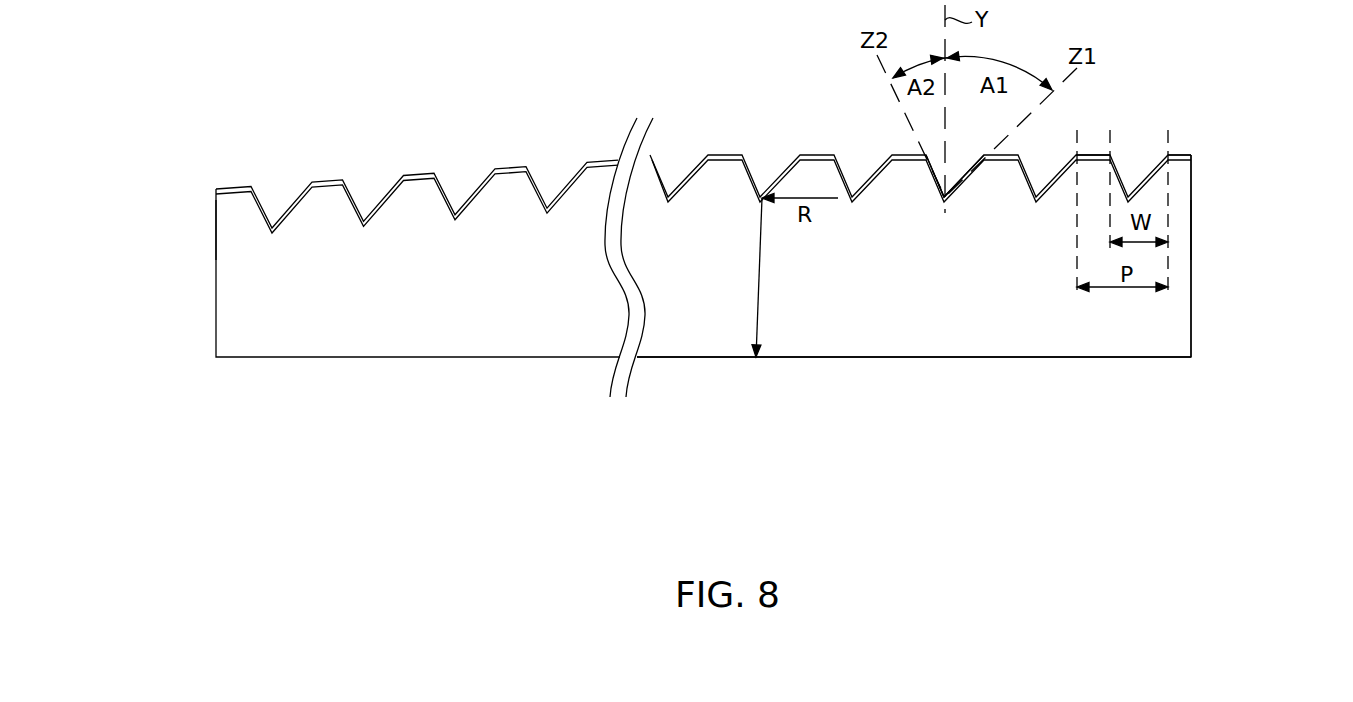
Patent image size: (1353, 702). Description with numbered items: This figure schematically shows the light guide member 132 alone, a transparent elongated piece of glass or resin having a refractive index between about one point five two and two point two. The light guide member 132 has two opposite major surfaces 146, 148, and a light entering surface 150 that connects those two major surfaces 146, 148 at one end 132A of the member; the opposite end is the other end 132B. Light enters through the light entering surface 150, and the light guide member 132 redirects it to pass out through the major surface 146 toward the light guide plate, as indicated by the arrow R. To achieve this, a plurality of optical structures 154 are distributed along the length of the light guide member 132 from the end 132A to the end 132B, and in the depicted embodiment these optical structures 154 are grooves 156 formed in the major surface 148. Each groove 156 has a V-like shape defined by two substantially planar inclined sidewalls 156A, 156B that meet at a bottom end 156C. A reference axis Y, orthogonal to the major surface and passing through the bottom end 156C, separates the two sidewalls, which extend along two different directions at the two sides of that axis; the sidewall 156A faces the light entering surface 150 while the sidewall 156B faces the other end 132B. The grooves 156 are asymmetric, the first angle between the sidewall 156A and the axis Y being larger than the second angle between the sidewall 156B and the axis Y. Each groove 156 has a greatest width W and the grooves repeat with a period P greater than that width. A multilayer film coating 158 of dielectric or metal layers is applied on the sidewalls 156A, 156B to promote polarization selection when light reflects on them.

The light guide member 132 is at (717, 287).
The end of the light guide member 132A is at (1222, 230).
The other end of the light guide member 132B is at (186, 230).
The major surface 146 is at (1090, 358).
The major surface 148 is at (1095, 152).
The light entering surface 150 is at (1191, 317).
The optical structures 154 is at (295, 152).
The grooves 156 is at (769, 149).
The sidewall 156A is at (968, 178).
The sidewall 156B is at (925, 176).
The bottom end of the groove 156C is at (947, 204).
The multilayer film coating 158 is at (1176, 152).